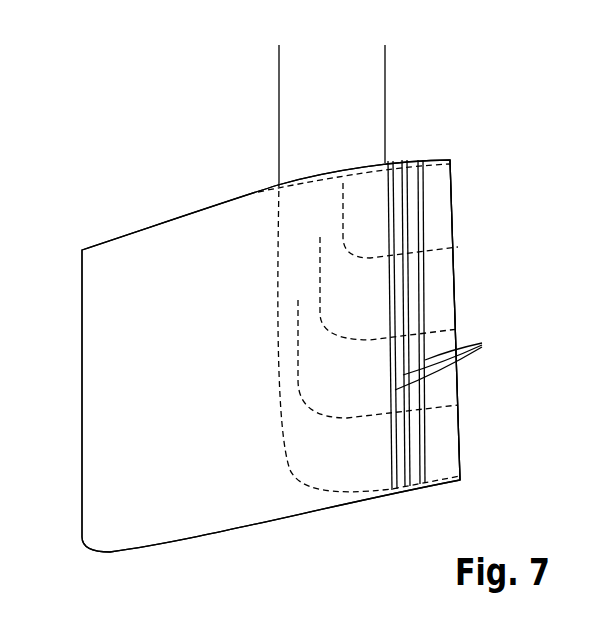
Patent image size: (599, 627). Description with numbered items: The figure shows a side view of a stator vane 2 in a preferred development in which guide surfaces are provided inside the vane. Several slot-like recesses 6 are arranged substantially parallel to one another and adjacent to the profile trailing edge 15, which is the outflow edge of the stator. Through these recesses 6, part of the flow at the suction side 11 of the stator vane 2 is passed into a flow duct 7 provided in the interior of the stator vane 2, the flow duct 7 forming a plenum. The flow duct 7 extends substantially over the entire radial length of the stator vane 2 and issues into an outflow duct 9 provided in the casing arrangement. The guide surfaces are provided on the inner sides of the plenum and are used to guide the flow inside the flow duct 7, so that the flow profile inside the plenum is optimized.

The stator vane 2 is at (87, 436).
The slot-like recesses 6 is at (450, 361).
The flow duct 7 is at (332, 477).
The outflow duct 9 is at (370, 103).
The suction side 11 is at (196, 412).
The profile trailing edge 15 is at (462, 447).